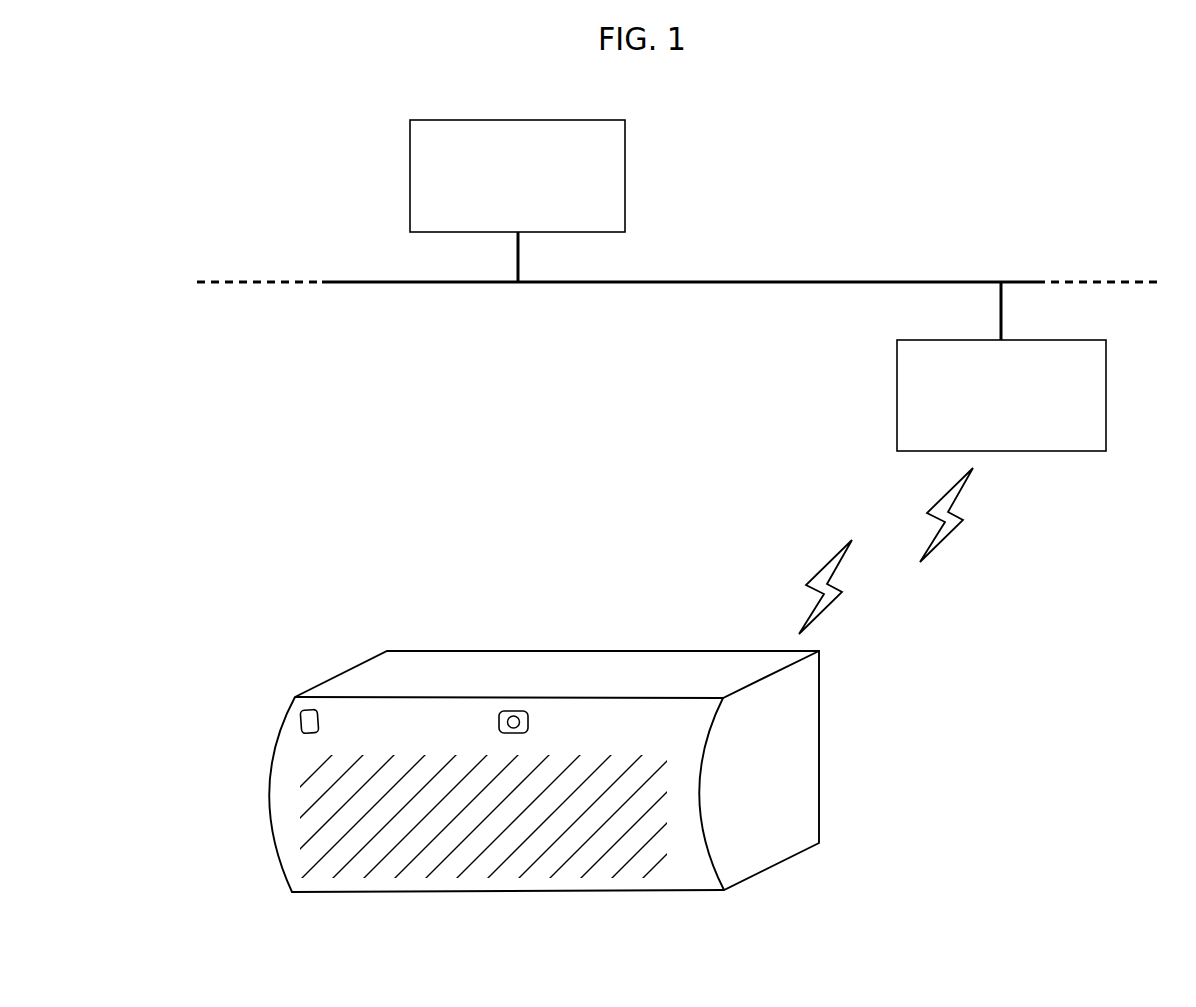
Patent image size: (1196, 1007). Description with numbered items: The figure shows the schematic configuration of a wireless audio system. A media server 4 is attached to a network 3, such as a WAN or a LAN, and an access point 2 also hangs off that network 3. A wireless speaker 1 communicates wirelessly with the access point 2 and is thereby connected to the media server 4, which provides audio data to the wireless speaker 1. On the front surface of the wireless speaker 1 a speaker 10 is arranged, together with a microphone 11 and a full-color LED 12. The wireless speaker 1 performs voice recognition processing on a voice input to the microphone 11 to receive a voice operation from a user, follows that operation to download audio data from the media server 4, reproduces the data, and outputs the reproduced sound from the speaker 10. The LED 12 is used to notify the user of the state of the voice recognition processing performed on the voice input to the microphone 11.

The wireless speaker 1 is at (504, 769).
The access point 2 is at (1055, 340).
The network 3 is at (910, 280).
The media server 4 is at (625, 143).
The speaker 10 is at (590, 848).
The microphone 11 is at (298, 718).
The full-color LED 12 is at (498, 717).